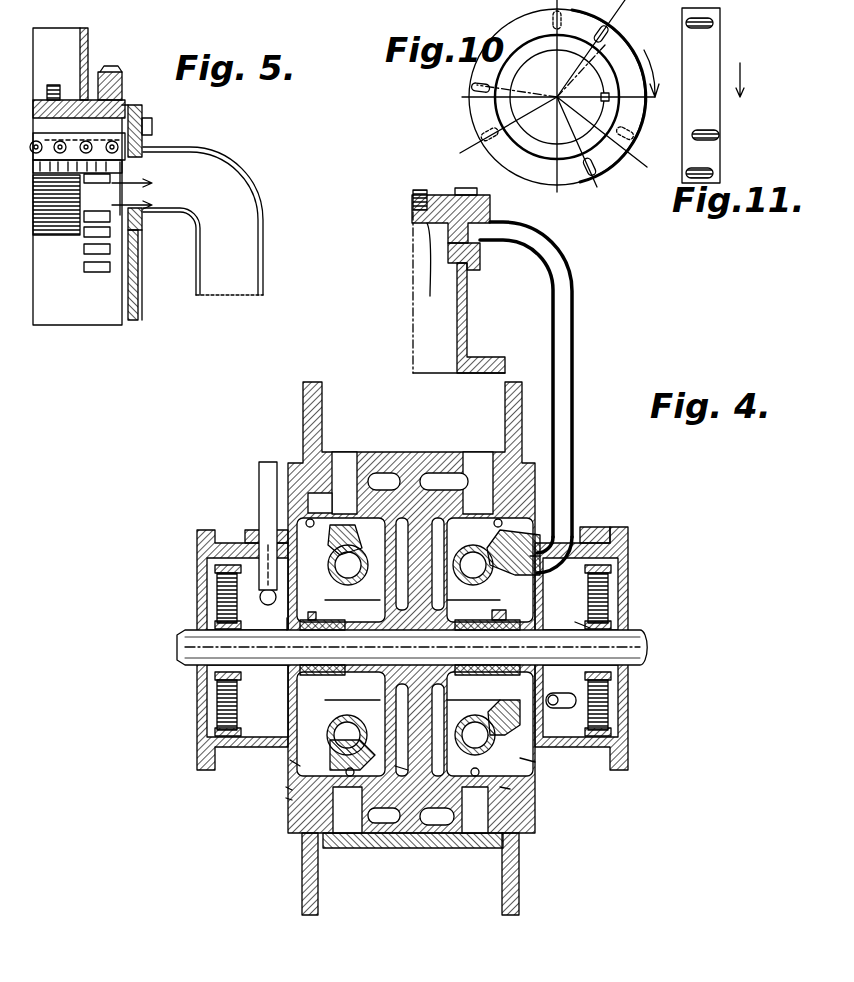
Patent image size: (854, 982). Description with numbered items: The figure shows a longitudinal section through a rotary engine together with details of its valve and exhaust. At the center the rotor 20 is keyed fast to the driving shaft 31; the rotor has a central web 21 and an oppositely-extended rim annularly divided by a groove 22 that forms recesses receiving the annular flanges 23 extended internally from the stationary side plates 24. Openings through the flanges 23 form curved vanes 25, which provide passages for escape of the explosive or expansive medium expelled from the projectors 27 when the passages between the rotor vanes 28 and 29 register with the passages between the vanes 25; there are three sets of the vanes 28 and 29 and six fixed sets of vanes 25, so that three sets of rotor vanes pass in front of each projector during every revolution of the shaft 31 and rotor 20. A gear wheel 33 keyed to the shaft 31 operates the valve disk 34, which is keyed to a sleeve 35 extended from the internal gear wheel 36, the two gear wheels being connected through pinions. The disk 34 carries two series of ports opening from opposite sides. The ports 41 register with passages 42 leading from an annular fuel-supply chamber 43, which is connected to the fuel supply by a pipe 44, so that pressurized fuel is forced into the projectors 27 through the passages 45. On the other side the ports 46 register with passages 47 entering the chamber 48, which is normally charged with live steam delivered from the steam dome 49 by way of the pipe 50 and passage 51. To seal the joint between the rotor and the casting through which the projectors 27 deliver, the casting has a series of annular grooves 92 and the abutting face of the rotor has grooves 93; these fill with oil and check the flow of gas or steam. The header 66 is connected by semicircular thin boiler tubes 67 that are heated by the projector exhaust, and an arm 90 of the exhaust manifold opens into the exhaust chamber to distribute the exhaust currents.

In FIG. 5, the rotor 20 is at (97, 322).
In FIG. 4, the rotor 20 is at (400, 836).
In FIG. 4, the central web 21 is at (405, 770).
In FIG. 4, the groove 22 is at (441, 822).
In FIG. 4, the annular flanges 23 is at (303, 813).
In FIG. 5, the side plates 24 is at (140, 258).
In FIG. 4, the side plates 24 is at (302, 883).
In FIG. 4, the curved vanes 25 is at (344, 476).
In FIG. 4, the projectors 27 is at (411, 650).
In FIG. 4, the vanes 28 is at (357, 505).
In FIG. 5, the vanes 29 is at (90, 256).
In FIG. 4, the vanes 29 is at (366, 478).
In FIG. 4, the driving shaft 31 is at (618, 647).
In FIG. 4, the gear wheel 33 is at (626, 612).
In FIG. 10, the valve disk 34 is at (527, 175).
In FIG. 11, the valve disk 34 is at (712, 115).
In FIG. 4, the valve disk 34 is at (338, 630).
In FIG. 4, the sleeve 35 is at (583, 628).
In FIG. 4, the internal gear wheel 36 is at (603, 590).
In FIG. 10, the ports 41 is at (605, 30).
In FIG. 11, the ports 41 is at (686, 23).
In FIG. 4, the ports 41 is at (313, 630).
In FIG. 4, the passages 42 is at (287, 626).
In FIG. 4, the annular fuel-supply chamber 43 is at (268, 628).
In FIG. 4, the pipe 44 is at (260, 487).
In FIG. 4, the passages 45 is at (335, 584).
In FIG. 10, the ports 46 is at (560, 15).
In FIG. 11, the ports 46 is at (719, 136).
In FIG. 4, the ports 46 is at (488, 628).
In FIG. 4, the passages 47 is at (330, 612).
In FIG. 4, the chamber 48 is at (297, 764).
In FIG. 5, the steam dome 49 is at (66, 48).
In FIG. 4, the steam dome 49 is at (413, 312).
In FIG. 4, the pipe 50 is at (572, 385).
In FIG. 4, the passage 51 is at (536, 558).
In FIG. 5, the header 66 is at (100, 142).
In FIG. 5, the boiler tubes 67 is at (82, 142).
In FIG. 5, the arm 90 is at (203, 165).
In FIG. 4, the annular grooves 92 is at (287, 788).
In FIG. 4, the grooves 93 is at (288, 798).